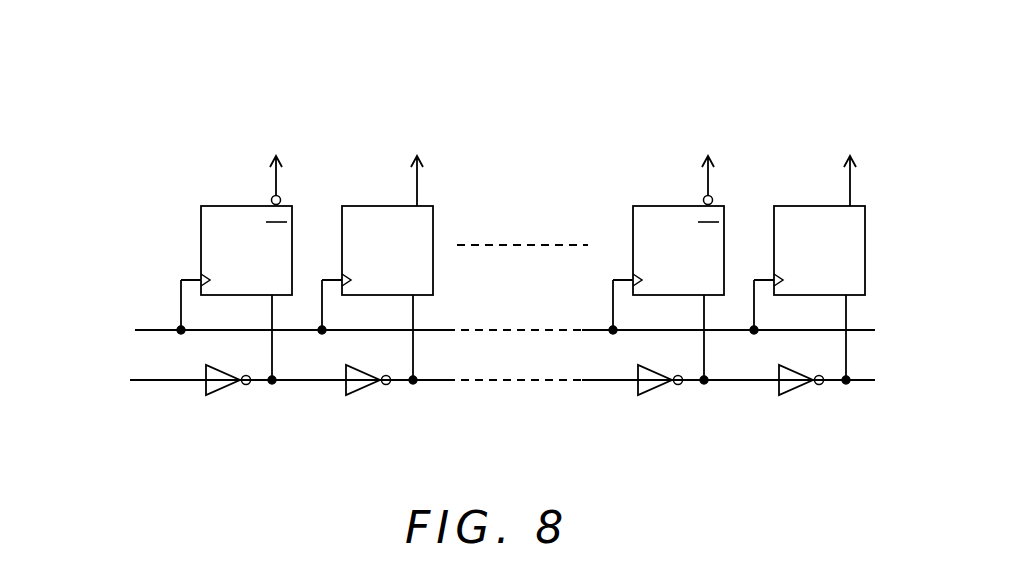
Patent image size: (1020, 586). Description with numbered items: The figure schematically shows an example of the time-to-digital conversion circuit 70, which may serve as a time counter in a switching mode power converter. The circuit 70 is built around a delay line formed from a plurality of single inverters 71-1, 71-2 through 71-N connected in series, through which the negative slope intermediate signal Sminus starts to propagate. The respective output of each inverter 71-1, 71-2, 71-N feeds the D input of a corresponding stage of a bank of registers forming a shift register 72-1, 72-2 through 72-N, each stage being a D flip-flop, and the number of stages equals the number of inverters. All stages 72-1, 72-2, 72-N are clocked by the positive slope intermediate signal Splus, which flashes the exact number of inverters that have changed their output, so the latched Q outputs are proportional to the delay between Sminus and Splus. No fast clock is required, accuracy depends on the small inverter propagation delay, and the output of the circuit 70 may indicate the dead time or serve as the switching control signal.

The time-to-digital conversion circuit 70 is at (150, 83).
The register 72-1 is at (208, 206).
The register 72-2 is at (349, 206).
The register 72-N is at (781, 206).
The inverter 71-1 is at (220, 392).
The inverter 71-2 is at (360, 392).
The inverter 71-N is at (793, 392).